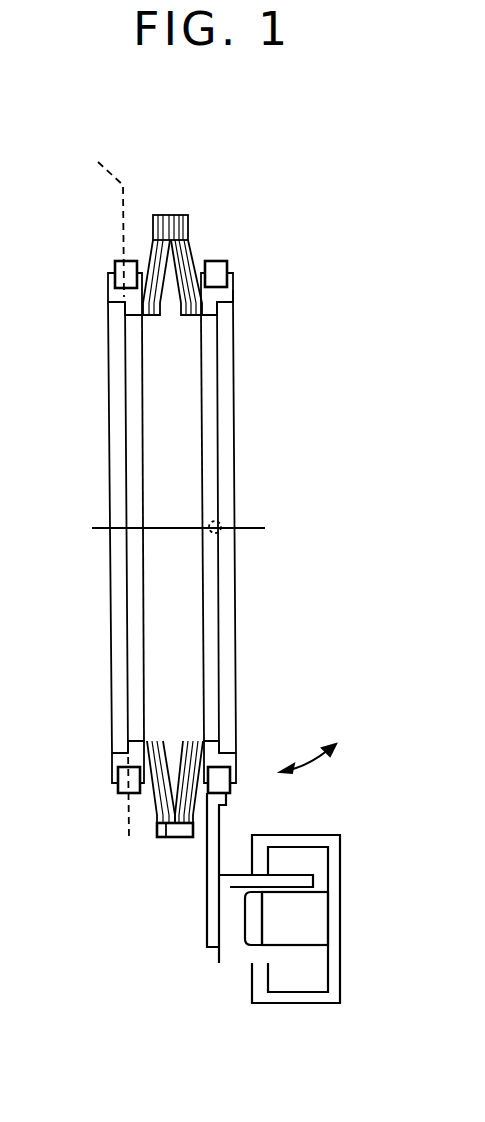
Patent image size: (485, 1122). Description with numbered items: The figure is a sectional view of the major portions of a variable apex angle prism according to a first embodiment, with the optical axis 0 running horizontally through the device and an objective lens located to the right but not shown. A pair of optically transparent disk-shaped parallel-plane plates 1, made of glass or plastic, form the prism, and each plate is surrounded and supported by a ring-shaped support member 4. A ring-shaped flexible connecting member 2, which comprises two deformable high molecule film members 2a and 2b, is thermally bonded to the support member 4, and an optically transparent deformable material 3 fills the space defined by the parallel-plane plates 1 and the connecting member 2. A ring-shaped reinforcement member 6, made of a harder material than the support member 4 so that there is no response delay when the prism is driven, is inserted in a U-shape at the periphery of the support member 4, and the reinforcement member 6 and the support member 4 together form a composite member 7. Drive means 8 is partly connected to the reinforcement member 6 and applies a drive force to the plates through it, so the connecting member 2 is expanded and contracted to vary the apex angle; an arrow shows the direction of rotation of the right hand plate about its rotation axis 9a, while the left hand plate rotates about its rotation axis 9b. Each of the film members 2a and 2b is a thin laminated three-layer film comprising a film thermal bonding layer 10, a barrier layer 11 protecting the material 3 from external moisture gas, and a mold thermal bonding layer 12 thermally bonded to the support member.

The optical axis 0 is at (92, 528).
The parallel-plane plates 1 is at (112, 340).
The flexible connecting member 2 is at (172, 213).
The high molecule film member 2a is at (190, 233).
The high molecule film member 2b is at (150, 237).
The optically transparent deformable material 3 is at (193, 398).
The support member 4 is at (108, 293).
The reinforcement member 6 is at (117, 282).
The composite member 7 is at (240, 308).
The drive means 8 is at (343, 848).
The rotation axis 9a is at (217, 523).
The rotation axis 9b is at (96, 488).
The film thermal bonding layer 10 is at (175, 840).
The barrier layer 11 is at (165, 838).
The mold thermal bonding layer 12 is at (152, 810).